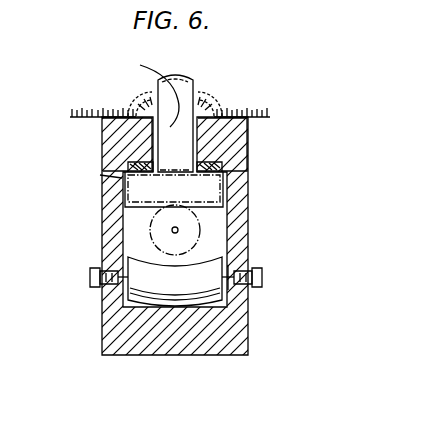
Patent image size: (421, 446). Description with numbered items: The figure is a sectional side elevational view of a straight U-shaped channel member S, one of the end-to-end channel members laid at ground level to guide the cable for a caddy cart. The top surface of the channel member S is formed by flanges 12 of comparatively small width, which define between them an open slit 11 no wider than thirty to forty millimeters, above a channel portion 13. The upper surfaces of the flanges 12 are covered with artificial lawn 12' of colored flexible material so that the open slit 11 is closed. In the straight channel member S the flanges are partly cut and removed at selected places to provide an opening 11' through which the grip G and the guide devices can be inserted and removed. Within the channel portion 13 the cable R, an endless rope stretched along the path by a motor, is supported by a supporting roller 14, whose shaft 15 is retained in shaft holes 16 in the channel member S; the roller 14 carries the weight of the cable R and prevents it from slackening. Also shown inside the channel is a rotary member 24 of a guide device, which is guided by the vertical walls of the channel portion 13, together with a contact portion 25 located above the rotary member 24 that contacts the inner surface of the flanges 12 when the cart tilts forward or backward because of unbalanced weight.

The open slit 11 is at (163, 114).
The opening 11' is at (173, 144).
The flange 12 is at (173, 165).
The artificial lawn 12' is at (170, 92).
The channel portion 13 is at (173, 305).
The supporting roller 14 is at (207, 253).
The shaft 15 is at (245, 262).
The shaft hole 16 is at (112, 265).
The rotary member 24 is at (212, 190).
The contact portion 25 is at (98, 184).
The cable R is at (207, 223).
The grip G is at (153, 228).
The straight U-shaped channel member S is at (124, 372).